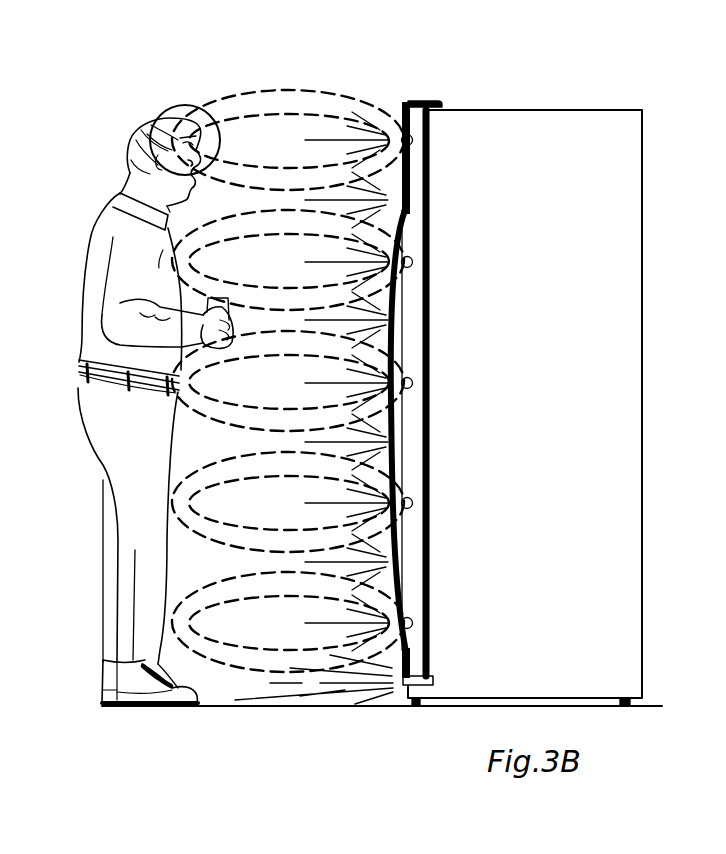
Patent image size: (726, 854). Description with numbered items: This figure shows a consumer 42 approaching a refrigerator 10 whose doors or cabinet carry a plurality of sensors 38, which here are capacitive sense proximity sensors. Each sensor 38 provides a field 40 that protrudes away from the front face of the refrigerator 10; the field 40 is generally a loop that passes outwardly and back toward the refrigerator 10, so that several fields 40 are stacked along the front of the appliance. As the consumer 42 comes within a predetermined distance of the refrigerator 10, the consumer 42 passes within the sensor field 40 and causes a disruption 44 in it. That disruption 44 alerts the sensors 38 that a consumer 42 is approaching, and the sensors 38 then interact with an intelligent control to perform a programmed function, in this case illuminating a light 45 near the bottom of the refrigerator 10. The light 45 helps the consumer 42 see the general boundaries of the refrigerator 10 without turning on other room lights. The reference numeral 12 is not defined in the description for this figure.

The refrigerator 10 is at (560, 58).
The cabinet door 12 is at (535, 111).
The sensors 38 is at (403, 118).
The field 40 is at (283, 88).
The consumer 42 is at (133, 140).
The disruption 44 is at (163, 115).
The light 45 is at (363, 692).